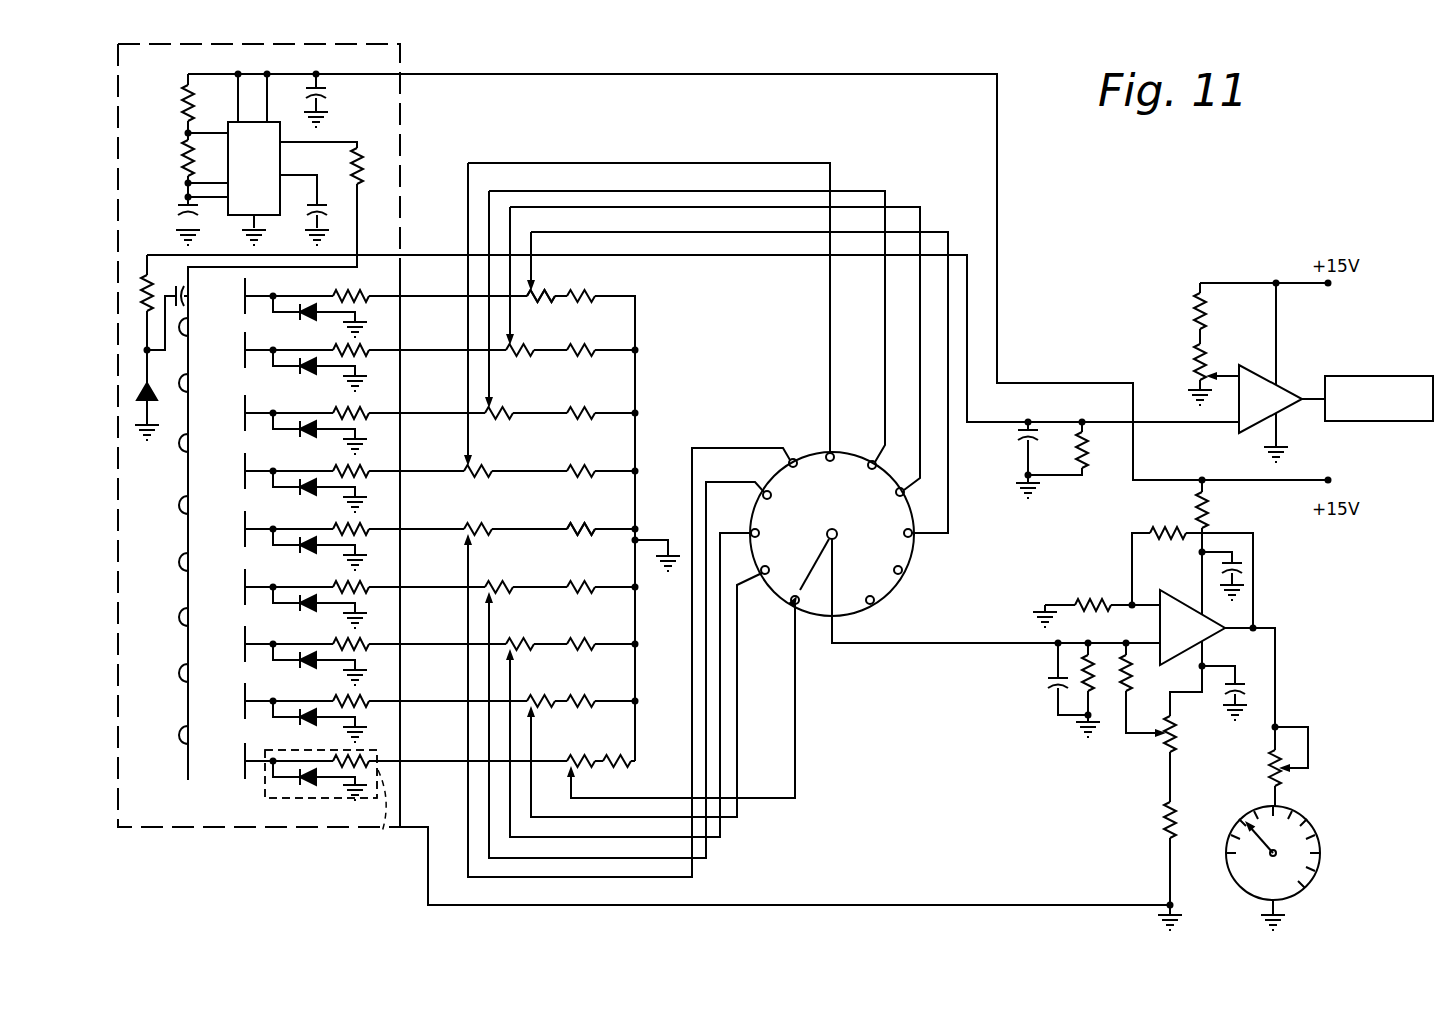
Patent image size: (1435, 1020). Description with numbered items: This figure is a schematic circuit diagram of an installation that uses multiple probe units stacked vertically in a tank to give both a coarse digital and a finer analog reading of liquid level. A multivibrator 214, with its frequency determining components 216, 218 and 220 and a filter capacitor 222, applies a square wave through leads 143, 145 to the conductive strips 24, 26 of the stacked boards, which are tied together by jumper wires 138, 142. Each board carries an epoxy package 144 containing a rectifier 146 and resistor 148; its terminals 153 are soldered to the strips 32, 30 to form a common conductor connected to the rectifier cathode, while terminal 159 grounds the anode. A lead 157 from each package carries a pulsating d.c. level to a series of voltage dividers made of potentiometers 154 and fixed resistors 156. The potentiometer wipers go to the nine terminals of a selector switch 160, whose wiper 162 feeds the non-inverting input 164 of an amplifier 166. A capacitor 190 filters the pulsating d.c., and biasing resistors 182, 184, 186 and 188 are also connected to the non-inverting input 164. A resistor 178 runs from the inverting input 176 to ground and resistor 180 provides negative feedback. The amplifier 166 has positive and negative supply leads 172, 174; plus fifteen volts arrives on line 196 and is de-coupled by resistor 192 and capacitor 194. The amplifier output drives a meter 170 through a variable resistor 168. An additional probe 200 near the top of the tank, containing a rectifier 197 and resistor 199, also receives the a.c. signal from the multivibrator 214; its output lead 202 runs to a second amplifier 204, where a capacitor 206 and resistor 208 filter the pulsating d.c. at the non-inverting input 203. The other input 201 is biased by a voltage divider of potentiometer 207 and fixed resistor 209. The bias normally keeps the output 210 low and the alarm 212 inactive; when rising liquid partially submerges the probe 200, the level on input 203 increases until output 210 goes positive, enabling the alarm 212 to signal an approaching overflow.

The frequency determining component 216 is at (185, 98).
The frequency determining component 218 is at (185, 153).
The frequency determining component 220 is at (169, 212).
The multivibrator 214 is at (269, 171).
The filter capacitor 222 is at (330, 92).
The output lead 202 is at (440, 255).
The resistor 199 is at (140, 292).
The probe 200 is at (186, 294).
The rectifier 197 is at (135, 390).
The lead 143 is at (268, 272).
The lead 145 is at (386, 817).
The epoxy package 144 is at (284, 316).
The rectifier 146 is at (308, 550).
The resistor 148 is at (354, 532).
The jumper wire 138 is at (182, 562).
The jumper wire 142 is at (182, 617).
The conductive strip 24 is at (188, 642).
The conductive strip 26 is at (188, 757).
The strip 30 is at (243, 640).
The strip 32 is at (243, 765).
The terminal 153 is at (263, 765).
The terminal 159 is at (375, 772).
The lead 157 is at (448, 764).
The potentiometer 154 is at (476, 530).
The fixed resistor 156 is at (592, 517).
The selector switch 160 is at (916, 566).
The wiper 162 is at (814, 562).
The non-inverting input 164 is at (1108, 639).
The amplifier 166 is at (1222, 632).
The variable resistor 168 is at (1262, 764).
The meter 170 is at (1324, 844).
The positive supply lead 172 is at (1210, 585).
The negative supply lead 174 is at (1204, 664).
The inverting input 176 is at (1141, 597).
The resistor 178 is at (1102, 600).
The resistor 180 is at (1160, 531).
The biasing resistor 182 is at (1084, 704).
The biasing resistor 184 is at (1132, 685).
The biasing resistor 186 is at (1176, 750).
The biasing resistor 188 is at (1160, 834).
The capacitor 190 is at (1046, 691).
The resistor 192 is at (1208, 512).
The capacitor 194 is at (1244, 565).
The line 196 is at (1258, 484).
The input 201 is at (1224, 373).
The non-inverting input 203 is at (1206, 426).
The second amplifier 204 is at (1293, 386).
The capacitor 206 is at (1017, 442).
The potentiometer 207 is at (1194, 364).
The resistor 208 is at (1090, 447).
The fixed resistor 209 is at (1194, 304).
The output 210 is at (1314, 418).
The alarm 212 is at (1388, 377).